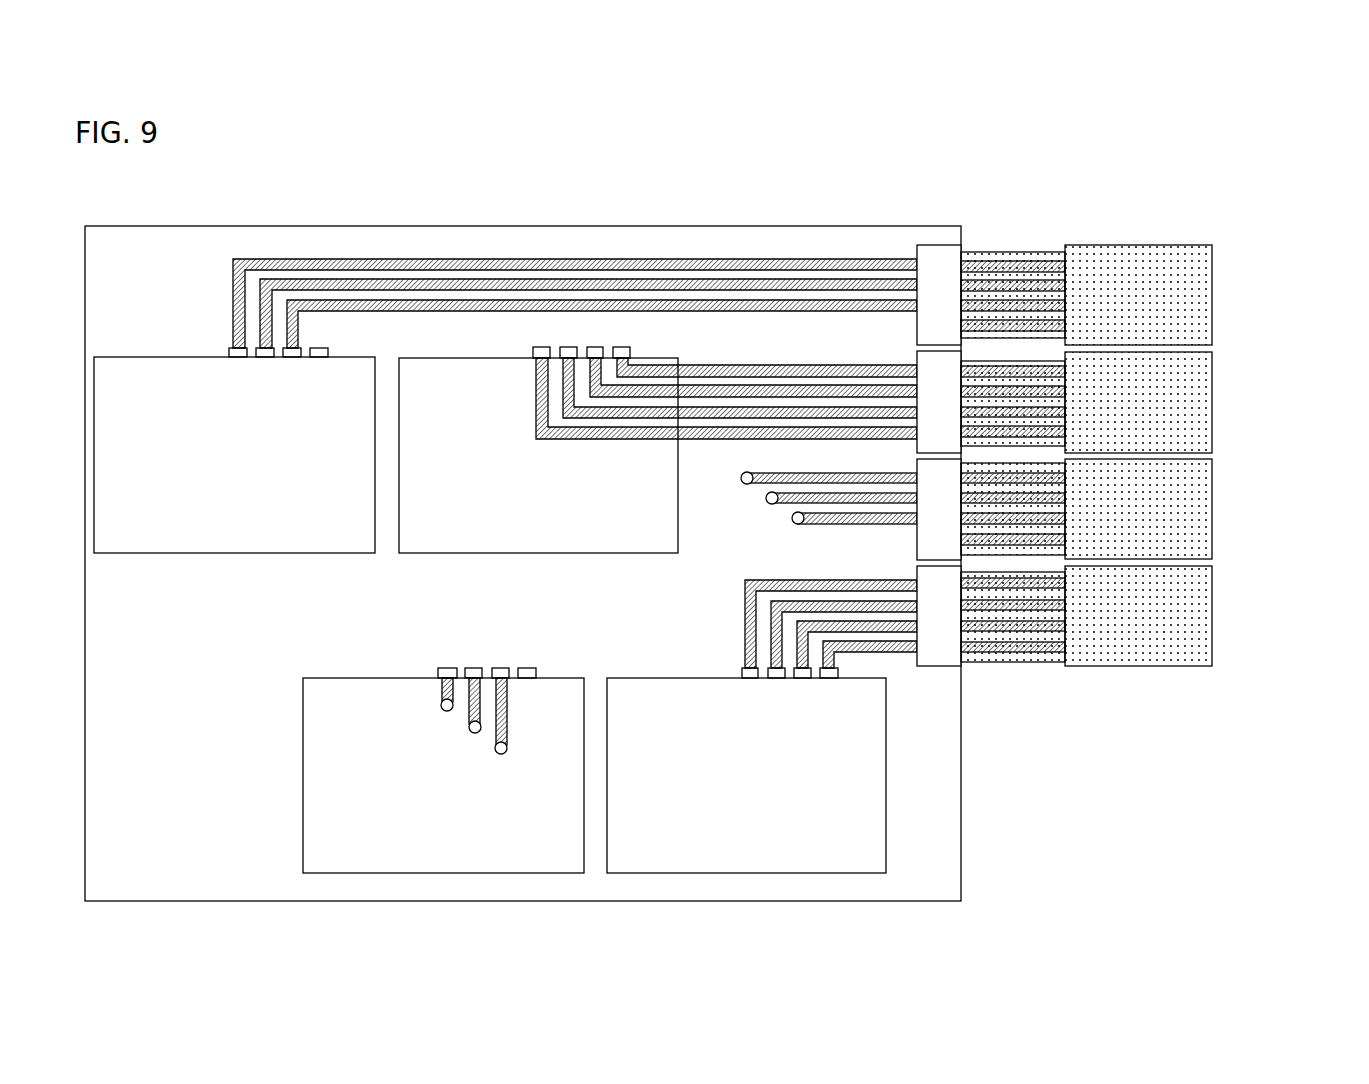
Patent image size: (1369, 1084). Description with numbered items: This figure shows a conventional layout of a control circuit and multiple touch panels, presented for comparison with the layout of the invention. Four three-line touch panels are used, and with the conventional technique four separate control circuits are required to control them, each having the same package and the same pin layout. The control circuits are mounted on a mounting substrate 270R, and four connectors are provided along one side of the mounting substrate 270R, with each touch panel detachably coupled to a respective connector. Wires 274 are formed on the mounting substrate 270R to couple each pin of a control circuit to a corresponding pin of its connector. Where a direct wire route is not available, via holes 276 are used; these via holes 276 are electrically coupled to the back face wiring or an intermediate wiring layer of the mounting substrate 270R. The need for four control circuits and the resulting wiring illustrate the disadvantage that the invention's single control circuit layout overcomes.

The mounting substrate 270R is at (322, 226).
The wires 274 is at (660, 300).
The via holes 276 is at (792, 519).